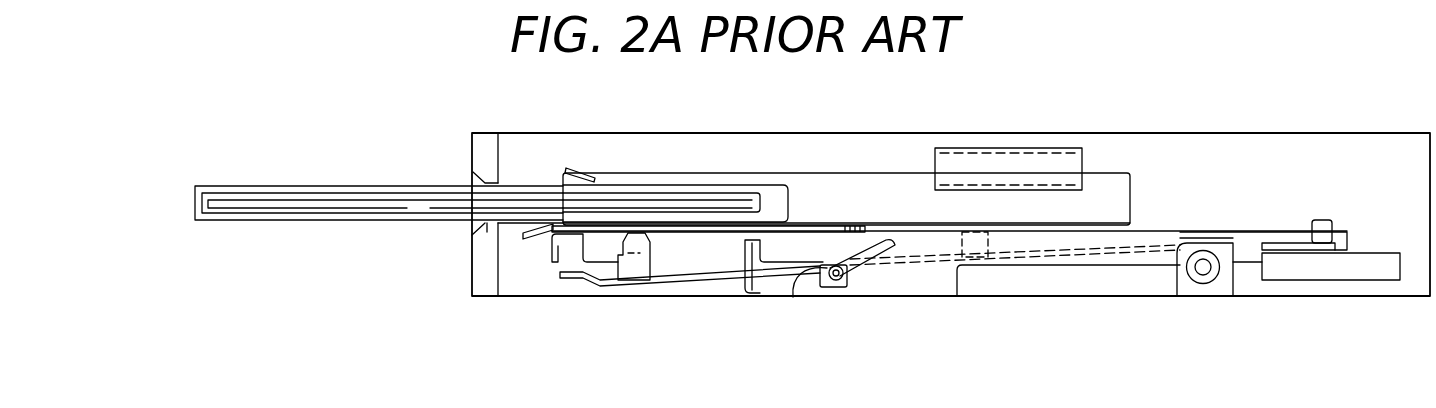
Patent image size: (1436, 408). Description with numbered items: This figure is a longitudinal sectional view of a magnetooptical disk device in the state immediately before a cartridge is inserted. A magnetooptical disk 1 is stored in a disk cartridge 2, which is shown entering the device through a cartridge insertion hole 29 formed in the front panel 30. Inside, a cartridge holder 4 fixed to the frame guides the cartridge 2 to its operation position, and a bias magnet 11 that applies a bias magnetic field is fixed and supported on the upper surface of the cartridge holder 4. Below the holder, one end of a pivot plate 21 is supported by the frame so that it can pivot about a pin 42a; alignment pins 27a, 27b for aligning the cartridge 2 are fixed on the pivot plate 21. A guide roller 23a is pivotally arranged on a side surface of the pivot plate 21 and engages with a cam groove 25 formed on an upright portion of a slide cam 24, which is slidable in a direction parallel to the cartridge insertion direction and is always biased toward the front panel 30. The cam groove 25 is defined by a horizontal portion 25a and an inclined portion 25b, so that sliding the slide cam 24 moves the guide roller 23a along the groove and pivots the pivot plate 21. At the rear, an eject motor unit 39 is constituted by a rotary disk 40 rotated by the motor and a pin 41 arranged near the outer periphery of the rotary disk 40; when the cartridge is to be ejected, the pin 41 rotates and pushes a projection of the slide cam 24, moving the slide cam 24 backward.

The magnetooptical disk 1 is at (588, 205).
The disk cartridge 2 is at (255, 222).
The cartridge holder 4 is at (546, 238).
The bias magnet 11 is at (1044, 165).
The pivot plate 21 is at (715, 283).
The guide roller 23a is at (848, 292).
The slide cam 24 is at (948, 278).
The cam groove 25 is at (888, 273).
The horizontal portion 25a is at (797, 290).
The inclined portion 25b is at (840, 226).
The alignment pin 27a is at (635, 272).
The alignment pin 27b is at (993, 243).
The cartridge insertion hole 29 is at (482, 180).
The front panel 30 is at (480, 255).
The eject motor unit 39 is at (1306, 272).
The rotary disk 40 is at (1335, 243).
The pin 41 is at (1322, 230).
The pin (shaft) 42a is at (1203, 267).